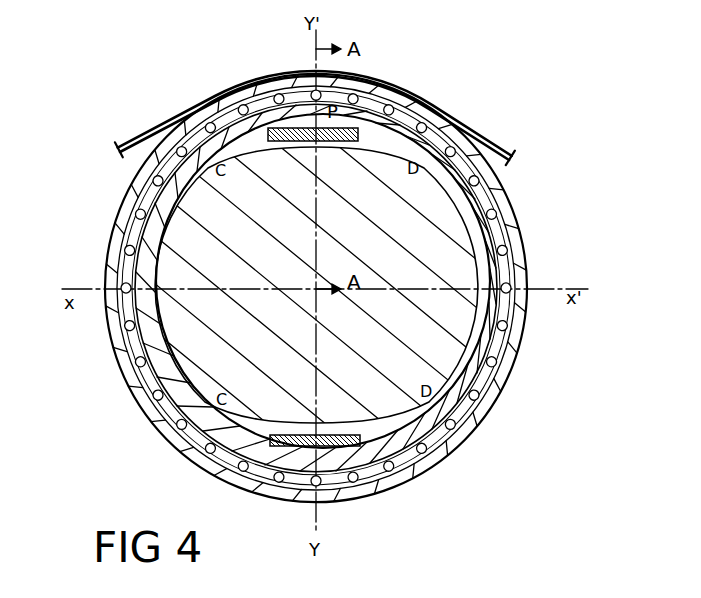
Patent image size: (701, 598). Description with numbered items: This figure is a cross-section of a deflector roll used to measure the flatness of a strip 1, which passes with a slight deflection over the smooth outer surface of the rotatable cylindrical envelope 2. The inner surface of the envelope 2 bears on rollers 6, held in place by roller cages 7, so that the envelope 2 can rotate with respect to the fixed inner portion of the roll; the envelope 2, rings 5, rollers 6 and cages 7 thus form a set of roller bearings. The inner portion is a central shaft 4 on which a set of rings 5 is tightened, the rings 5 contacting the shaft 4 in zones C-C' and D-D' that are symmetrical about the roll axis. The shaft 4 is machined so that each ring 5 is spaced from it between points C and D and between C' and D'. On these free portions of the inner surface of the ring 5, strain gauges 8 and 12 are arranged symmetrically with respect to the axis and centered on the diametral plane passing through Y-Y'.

The strip 1 is at (163, 126).
The cylindrical envelope 2 is at (490, 186).
The shaft 4 is at (203, 248).
The cylindrical rings 5 is at (497, 305).
The rollers 6 is at (494, 357).
The roller cages 7 is at (495, 300).
The strain gauge 8 is at (208, 168).
The strain gauge 12 is at (462, 427).